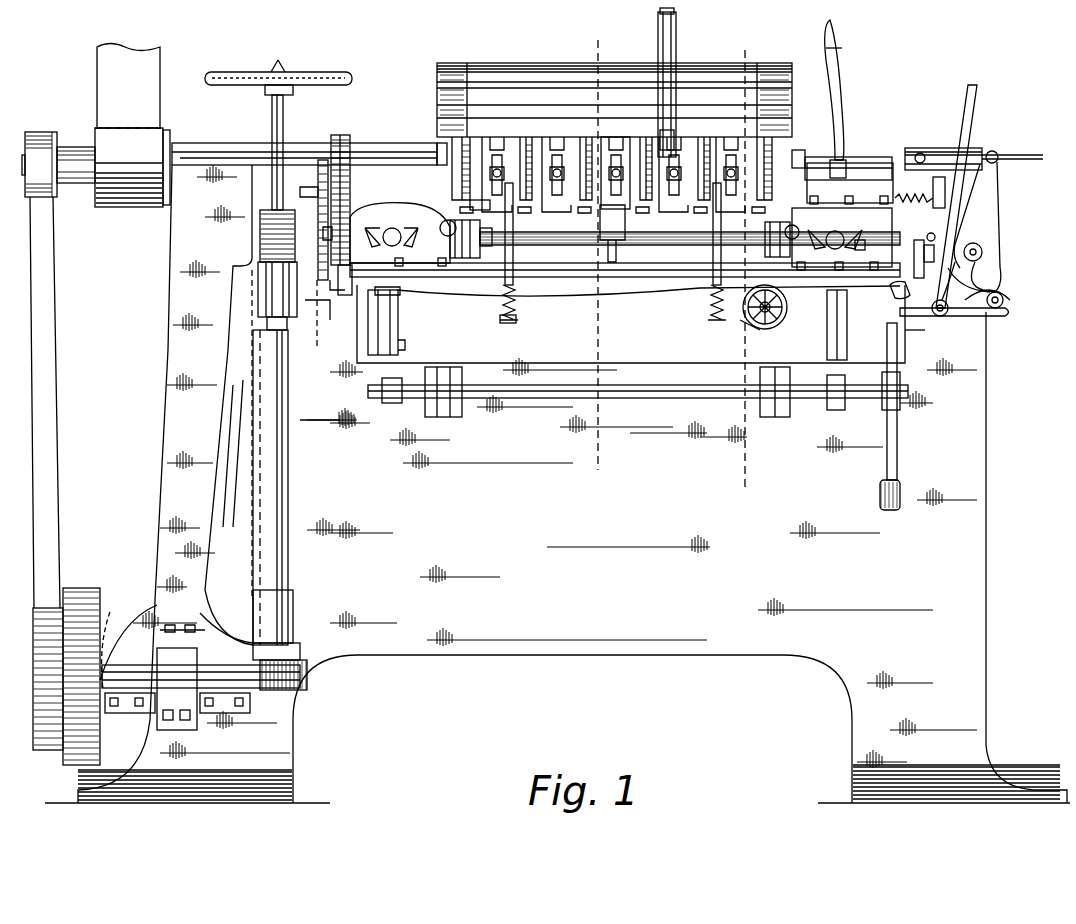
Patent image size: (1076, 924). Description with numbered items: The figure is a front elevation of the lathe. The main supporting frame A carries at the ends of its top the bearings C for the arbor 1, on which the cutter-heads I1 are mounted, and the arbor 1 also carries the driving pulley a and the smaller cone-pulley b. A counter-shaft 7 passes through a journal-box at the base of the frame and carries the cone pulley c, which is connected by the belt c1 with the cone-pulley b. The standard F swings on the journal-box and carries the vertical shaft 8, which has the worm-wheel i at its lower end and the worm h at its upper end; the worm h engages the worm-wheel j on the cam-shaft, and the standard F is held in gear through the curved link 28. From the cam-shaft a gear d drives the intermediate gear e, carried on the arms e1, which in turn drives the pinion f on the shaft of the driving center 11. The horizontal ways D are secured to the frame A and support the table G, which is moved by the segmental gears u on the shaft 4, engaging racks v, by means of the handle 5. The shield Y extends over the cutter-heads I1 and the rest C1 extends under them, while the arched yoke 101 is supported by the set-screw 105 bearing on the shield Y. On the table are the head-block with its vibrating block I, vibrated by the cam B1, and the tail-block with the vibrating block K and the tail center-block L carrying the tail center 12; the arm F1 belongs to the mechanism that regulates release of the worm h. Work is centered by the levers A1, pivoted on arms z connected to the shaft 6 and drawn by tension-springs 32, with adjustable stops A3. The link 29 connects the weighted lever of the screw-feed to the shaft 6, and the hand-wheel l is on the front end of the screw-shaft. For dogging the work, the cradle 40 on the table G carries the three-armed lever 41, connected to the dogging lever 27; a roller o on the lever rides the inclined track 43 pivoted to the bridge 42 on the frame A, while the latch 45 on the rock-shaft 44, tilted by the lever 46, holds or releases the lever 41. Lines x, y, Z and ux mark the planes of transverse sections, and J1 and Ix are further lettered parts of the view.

The arbor 1 is at (174, 143).
The cone pulley c is at (72, 690).
The belt c1 is at (58, 380).
The cone-pulley b is at (55, 200).
The driving pulley a is at (105, 207).
The section line x x is at (250, 140).
The worm h is at (262, 240).
The curved link 28 is at (650, 226).
The vertical shaft 8 is at (290, 476).
The pinion f is at (342, 138).
The intermediate gear e is at (350, 160).
The section line U×, U× ux is at (320, 271).
The arms e1 is at (330, 290).
The gear d is at (345, 285).
The shield Y is at (614, 100).
The driving center 11 is at (437, 146).
The arched yoke 101 is at (676, 65).
The set-screw 105 is at (674, 13).
The section line y y is at (597, 248).
The section line z, z Z is at (737, 267).
The cutter-heads I1 is at (620, 150).
The levers A1 is at (612, 181).
The stops or shoulders A3 is at (509, 204).
The bearings C is at (690, 233).
The table G is at (552, 278).
The shaft 6 is at (640, 293).
The arms z is at (715, 318).
The tension-springs 32 is at (589, 328).
The vibrating block I is at (421, 224).
The worm-wheel j is at (420, 251).
The racks v is at (396, 299).
The tail center 12 is at (798, 155).
The dogging lever 27 is at (848, 120).
The tail center-block L is at (850, 183).
The spring Ix is at (920, 191).
The vibrating block K is at (842, 239).
The cam roller J1 is at (854, 247).
The cam B1 is at (780, 222).
The rest C1 is at (940, 148).
The lever 46 is at (972, 135).
The three-armed lever 41 is at (998, 218).
The cradle 40 is at (985, 275).
The bridge 42 is at (923, 248).
The roller o is at (935, 243).
The rock-shaft 44 is at (949, 307).
The latch 45 is at (980, 315).
The inclined track 43 is at (900, 332).
The link 29 is at (770, 320).
The hand-wheel l is at (749, 336).
The ways D is at (357, 325).
The segmental gears u is at (827, 338).
The shaft 4 is at (638, 393).
The handle or lever 5 is at (897, 435).
The arm F1 is at (212, 495).
The counter-shaft 7 is at (176, 643).
The standard F is at (201, 677).
The worm-wheel i is at (280, 692).
The main supporting frame A is at (557, 484).